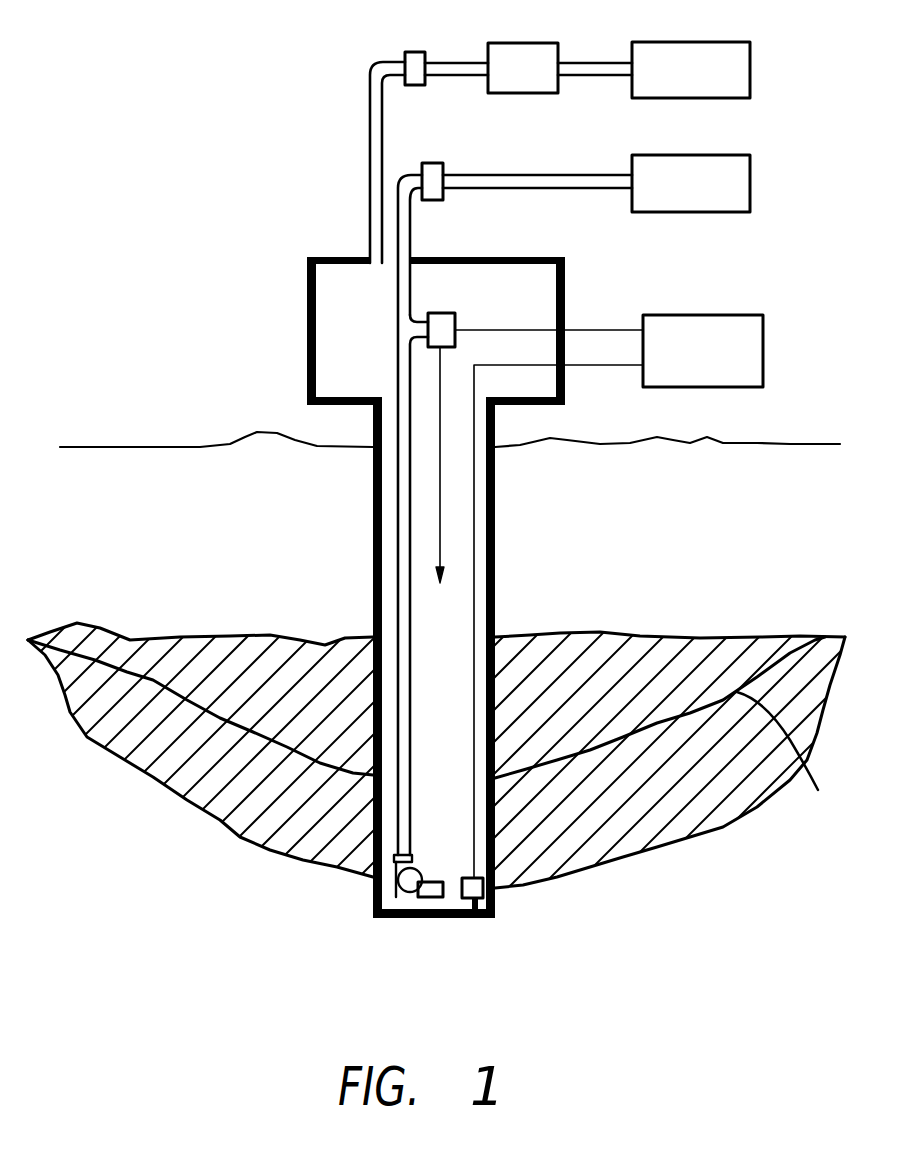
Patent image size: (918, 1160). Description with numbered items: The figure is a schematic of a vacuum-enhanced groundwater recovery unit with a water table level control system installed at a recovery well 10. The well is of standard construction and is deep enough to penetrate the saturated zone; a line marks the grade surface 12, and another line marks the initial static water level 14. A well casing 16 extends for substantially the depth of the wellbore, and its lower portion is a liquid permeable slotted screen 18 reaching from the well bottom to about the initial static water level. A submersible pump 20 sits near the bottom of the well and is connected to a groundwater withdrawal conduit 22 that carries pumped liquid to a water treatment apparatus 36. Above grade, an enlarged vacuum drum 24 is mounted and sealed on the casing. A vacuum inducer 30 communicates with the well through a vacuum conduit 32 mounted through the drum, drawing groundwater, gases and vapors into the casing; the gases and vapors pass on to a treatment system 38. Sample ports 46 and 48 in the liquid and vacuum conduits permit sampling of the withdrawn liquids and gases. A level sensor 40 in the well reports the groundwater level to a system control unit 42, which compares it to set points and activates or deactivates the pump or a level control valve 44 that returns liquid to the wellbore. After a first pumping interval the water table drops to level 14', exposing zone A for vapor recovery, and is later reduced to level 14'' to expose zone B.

The recovery well 10 is at (360, 433).
The grade surface 12 is at (747, 443).
The initial static water level 14 is at (459, 736).
The water table level 14' is at (798, 752).
The water table level 14'' is at (670, 767).
The well casing 16 is at (495, 517).
The slotted screen 18 is at (500, 662).
The submersible pump 20 is at (412, 919).
The groundwater withdrawal conduit 22 is at (397, 537).
The vacuum drum 24 is at (565, 303).
The vacuum inducer 30 is at (560, 68).
The vacuum conduit 32 is at (368, 196).
The water treatment apparatus 36 is at (691, 183).
The treatment system 38 is at (691, 70).
The level sensor 40 is at (475, 920).
The system control unit 42 is at (703, 351).
The level control valve 44 is at (442, 313).
The sample port 46 is at (418, 52).
The sample port 48 is at (430, 163).